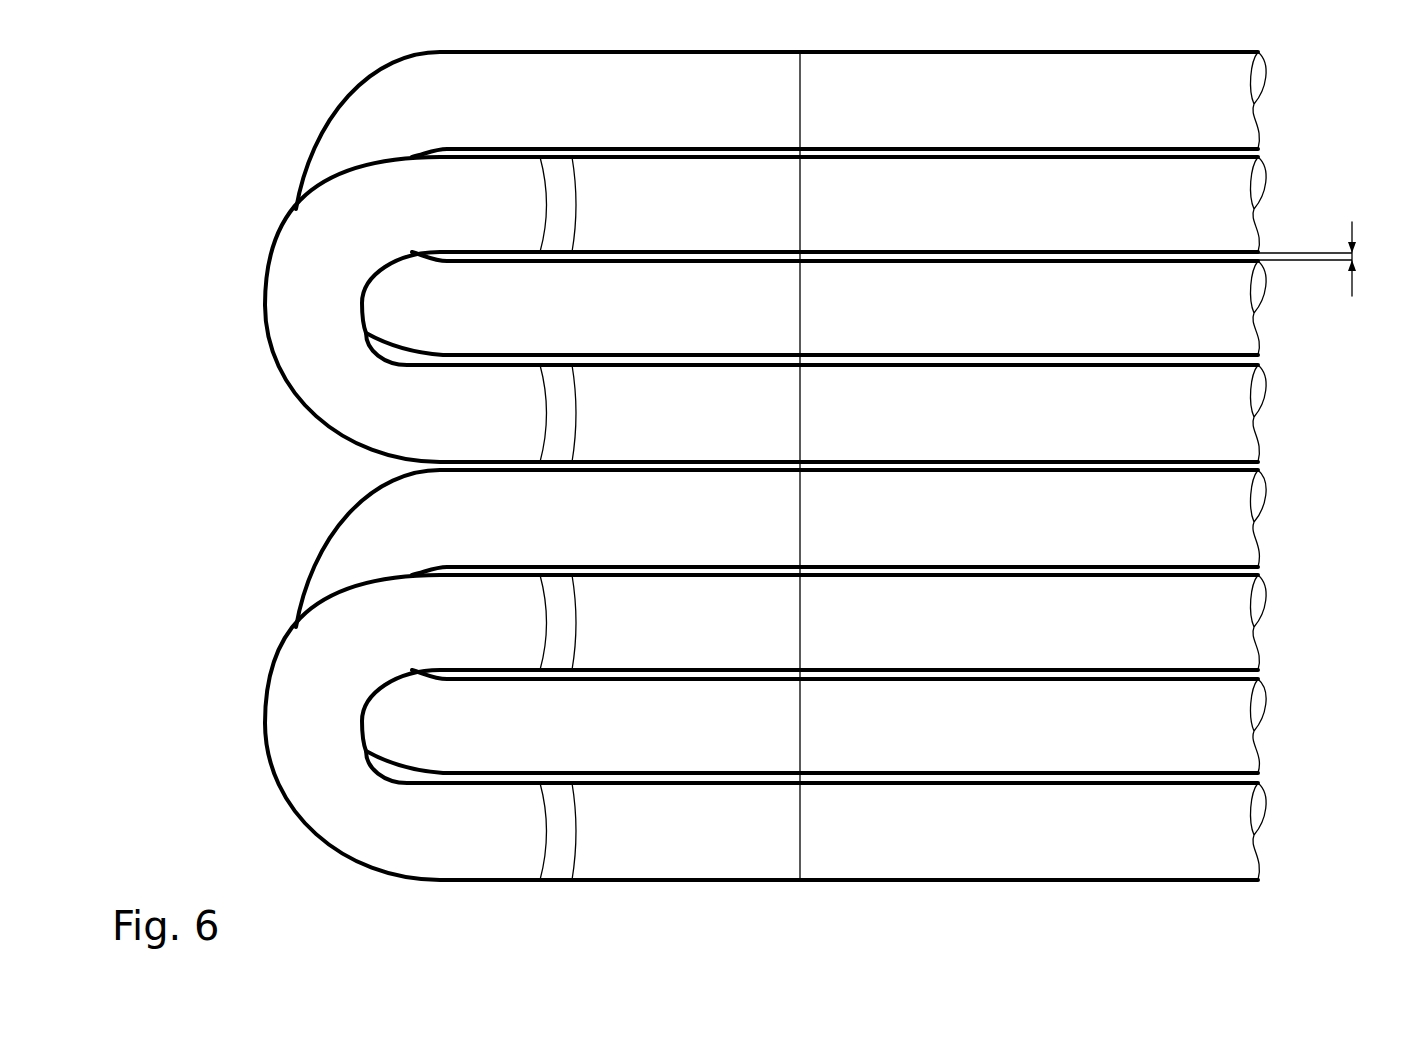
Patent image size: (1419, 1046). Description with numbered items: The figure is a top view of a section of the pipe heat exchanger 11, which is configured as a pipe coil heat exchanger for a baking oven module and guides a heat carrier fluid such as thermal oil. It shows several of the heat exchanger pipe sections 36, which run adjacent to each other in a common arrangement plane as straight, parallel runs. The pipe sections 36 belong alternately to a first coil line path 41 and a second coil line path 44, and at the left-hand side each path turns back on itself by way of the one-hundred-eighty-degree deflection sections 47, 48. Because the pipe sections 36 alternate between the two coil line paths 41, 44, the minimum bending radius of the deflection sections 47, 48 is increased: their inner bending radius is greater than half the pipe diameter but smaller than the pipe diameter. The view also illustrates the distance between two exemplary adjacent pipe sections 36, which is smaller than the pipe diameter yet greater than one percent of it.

The pipe heat exchanger 11 is at (235, 456).
The heat exchanger pipe sections 36 is at (1243, 105).
The first coil line path 41 is at (258, 272).
The second coil line path 44 is at (303, 140).
The 180° deflection section 47 is at (297, 330).
The 180° deflection section 48 is at (325, 154).